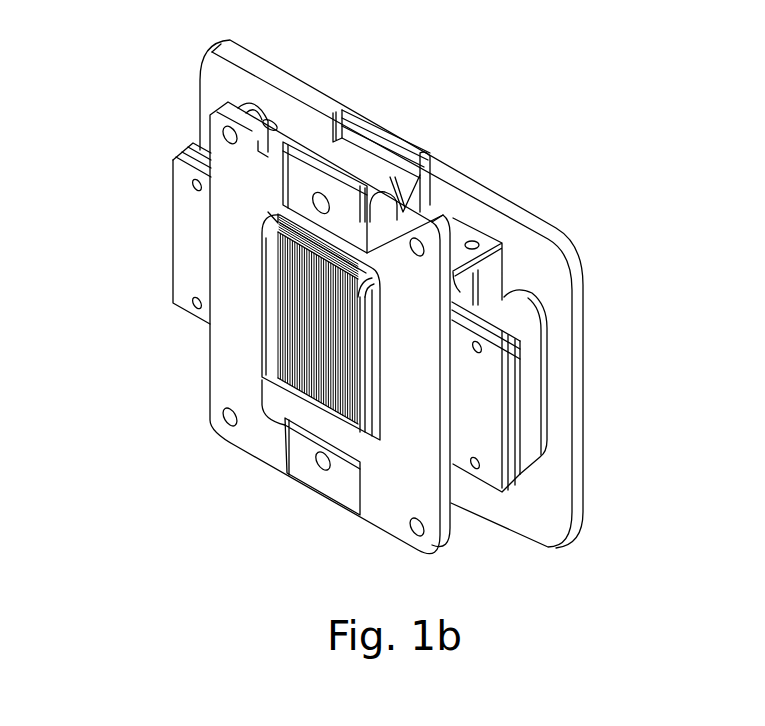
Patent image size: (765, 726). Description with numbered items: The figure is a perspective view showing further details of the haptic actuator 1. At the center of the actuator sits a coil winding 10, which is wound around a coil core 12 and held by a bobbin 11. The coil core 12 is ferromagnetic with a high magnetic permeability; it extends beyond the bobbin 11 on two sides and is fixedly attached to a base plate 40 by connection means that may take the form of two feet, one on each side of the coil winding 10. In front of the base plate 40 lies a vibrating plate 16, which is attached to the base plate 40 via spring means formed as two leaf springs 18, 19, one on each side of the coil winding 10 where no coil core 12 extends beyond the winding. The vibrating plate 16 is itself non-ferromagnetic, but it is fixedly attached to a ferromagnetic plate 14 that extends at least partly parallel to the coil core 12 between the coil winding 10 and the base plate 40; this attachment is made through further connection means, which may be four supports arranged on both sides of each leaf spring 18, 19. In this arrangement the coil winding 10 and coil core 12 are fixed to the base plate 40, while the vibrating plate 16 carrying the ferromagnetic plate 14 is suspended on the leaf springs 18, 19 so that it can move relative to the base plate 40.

The haptic actuator 1 is at (150, 100).
The coil winding 10 is at (320, 355).
The bobbin 11 is at (263, 320).
The coil core 12 is at (185, 243).
The ferromagnetic plate 14 is at (490, 287).
The vibrating plate 16 is at (415, 450).
The leaf spring 18 is at (335, 485).
The leaf spring 19 is at (383, 124).
The base plate 40 is at (480, 210).